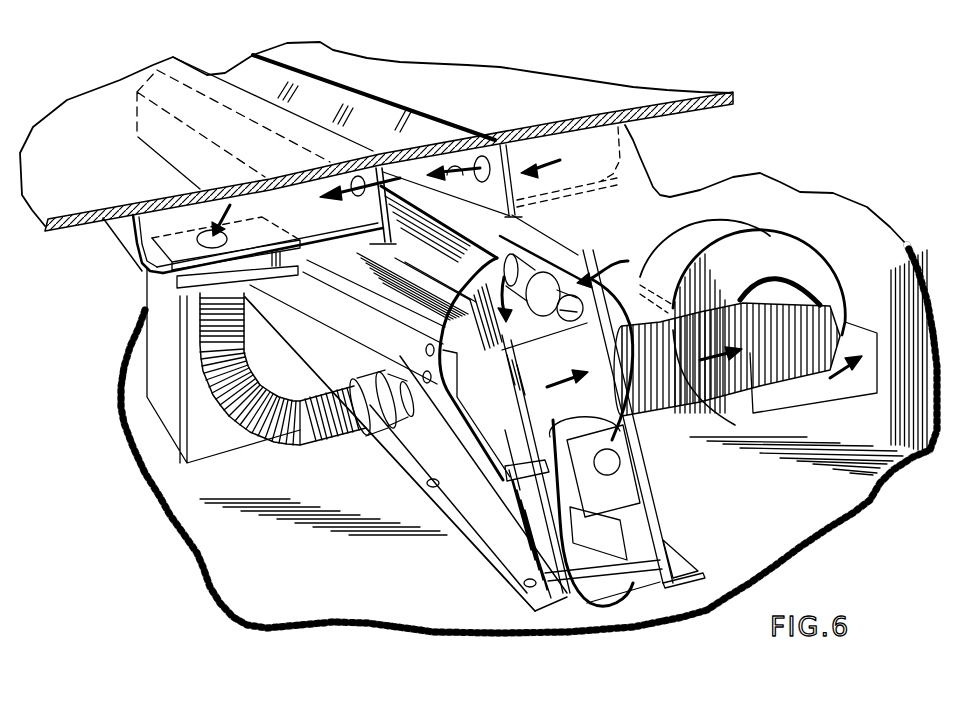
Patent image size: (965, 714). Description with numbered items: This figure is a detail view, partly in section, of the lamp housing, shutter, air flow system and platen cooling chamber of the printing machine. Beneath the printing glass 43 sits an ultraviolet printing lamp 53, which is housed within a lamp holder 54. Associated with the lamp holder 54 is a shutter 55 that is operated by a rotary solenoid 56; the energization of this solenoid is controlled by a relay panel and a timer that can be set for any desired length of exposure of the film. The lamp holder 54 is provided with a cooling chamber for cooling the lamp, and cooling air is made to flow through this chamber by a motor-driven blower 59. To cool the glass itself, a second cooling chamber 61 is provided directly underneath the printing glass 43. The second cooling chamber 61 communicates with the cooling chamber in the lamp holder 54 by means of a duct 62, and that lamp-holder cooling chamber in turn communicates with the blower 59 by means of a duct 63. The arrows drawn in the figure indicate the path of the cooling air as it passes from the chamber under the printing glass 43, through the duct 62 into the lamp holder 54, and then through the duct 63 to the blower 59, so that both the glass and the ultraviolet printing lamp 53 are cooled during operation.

The printing glass 43 is at (381, 130).
The ultraviolet printing lamp 53 is at (543, 264).
The lamp holder 54 is at (493, 495).
The shutter 55 is at (470, 265).
The rotary solenoid 56 is at (567, 462).
The blower 59 is at (787, 393).
The second cooling chamber 61 is at (444, 202).
The duct 62 is at (341, 440).
The duct 63 is at (665, 402).